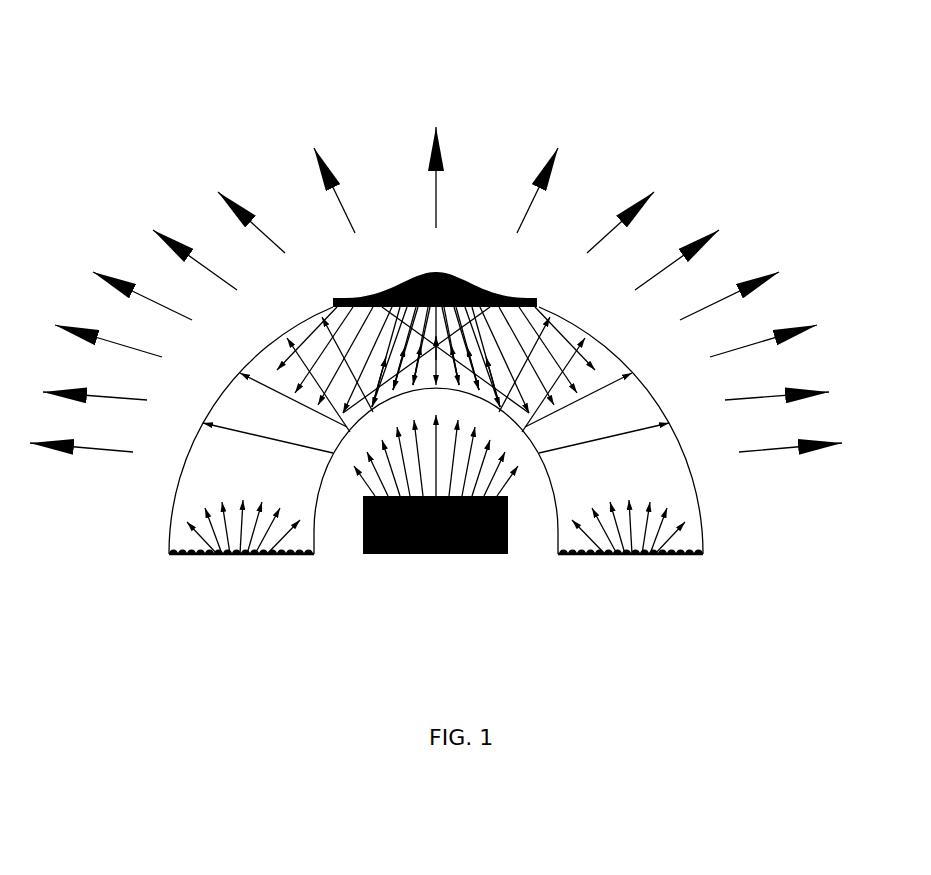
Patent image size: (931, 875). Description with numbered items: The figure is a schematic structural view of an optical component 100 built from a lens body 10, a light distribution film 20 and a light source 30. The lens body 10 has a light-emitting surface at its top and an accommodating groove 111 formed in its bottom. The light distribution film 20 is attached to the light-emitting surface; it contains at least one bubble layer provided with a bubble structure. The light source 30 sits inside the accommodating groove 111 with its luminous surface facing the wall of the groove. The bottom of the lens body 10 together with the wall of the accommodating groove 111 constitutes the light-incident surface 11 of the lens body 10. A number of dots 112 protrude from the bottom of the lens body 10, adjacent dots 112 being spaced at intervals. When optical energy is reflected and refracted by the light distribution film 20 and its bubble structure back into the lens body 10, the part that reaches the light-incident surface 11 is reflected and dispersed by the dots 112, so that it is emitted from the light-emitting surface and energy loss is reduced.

The optical component 100 is at (482, 53).
The lens body 10 is at (203, 467).
The light-incident surface 11 is at (198, 556).
The dots 112 is at (233, 557).
The accommodating groove 111 is at (337, 542).
The light distribution film 20 is at (449, 270).
The light source 30 is at (443, 556).